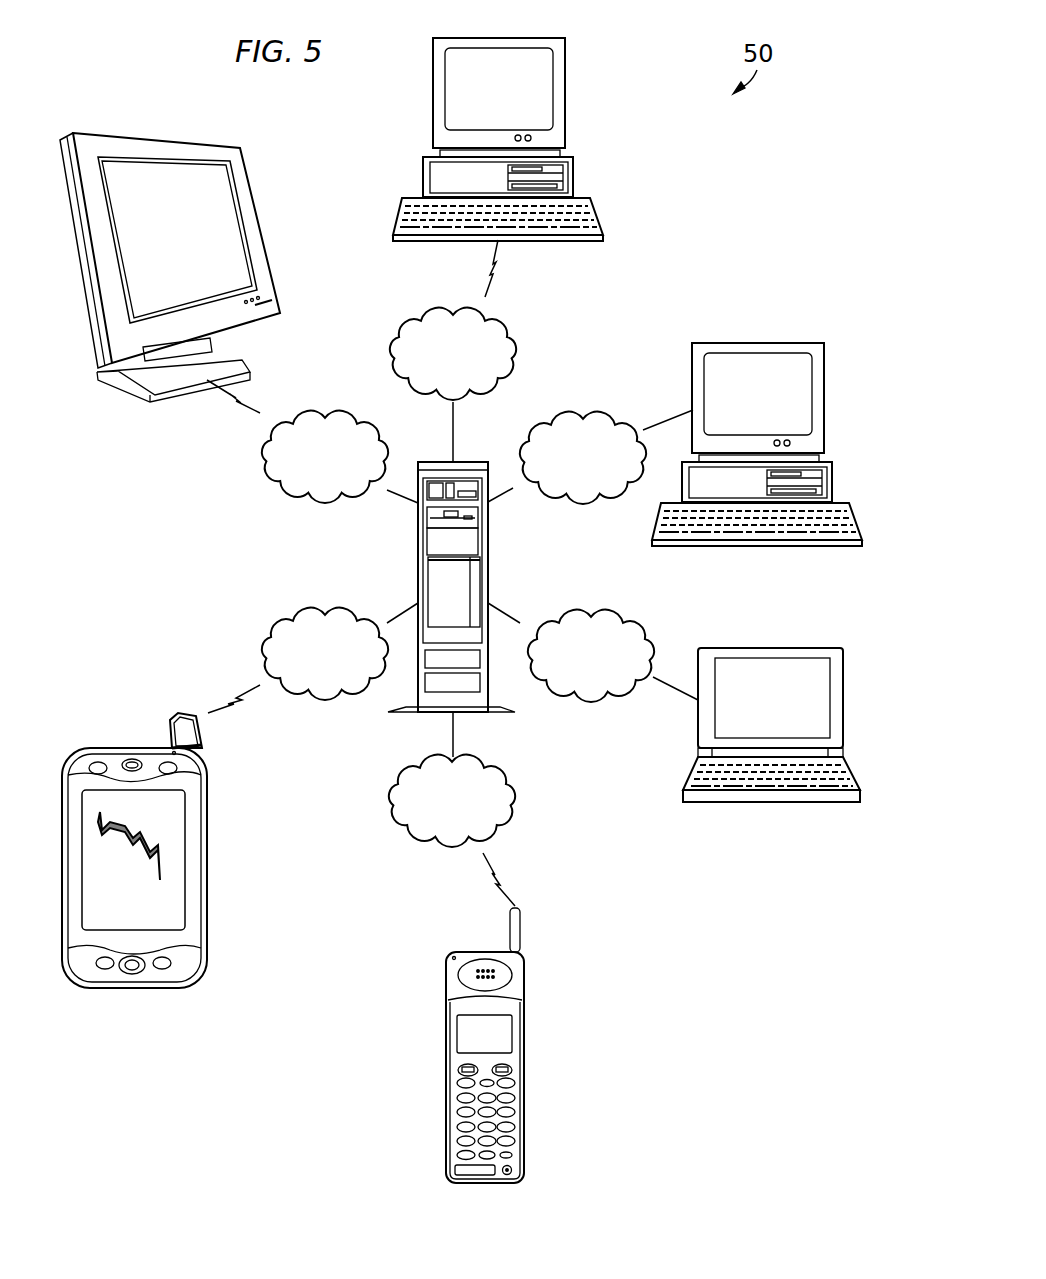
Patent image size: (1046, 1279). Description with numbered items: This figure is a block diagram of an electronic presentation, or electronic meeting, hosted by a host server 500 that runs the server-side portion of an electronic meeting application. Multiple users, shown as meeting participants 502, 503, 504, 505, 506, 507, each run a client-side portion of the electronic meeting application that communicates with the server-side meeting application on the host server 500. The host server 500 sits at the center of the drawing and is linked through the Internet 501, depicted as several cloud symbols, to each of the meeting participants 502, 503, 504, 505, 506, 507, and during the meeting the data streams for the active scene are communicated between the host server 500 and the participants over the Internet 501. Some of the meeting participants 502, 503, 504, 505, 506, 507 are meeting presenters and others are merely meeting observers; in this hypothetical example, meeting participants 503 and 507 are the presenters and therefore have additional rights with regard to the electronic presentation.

The host server 500 is at (418, 575).
The Internet 501 is at (458, 577).
The meeting participant 502 is at (565, 92).
The meeting participant 503 is at (758, 343).
The meeting participant 504 is at (771, 802).
The meeting participant 505 is at (523, 1060).
The meeting participant 506 is at (133, 988).
The meeting participant 507 is at (153, 133).